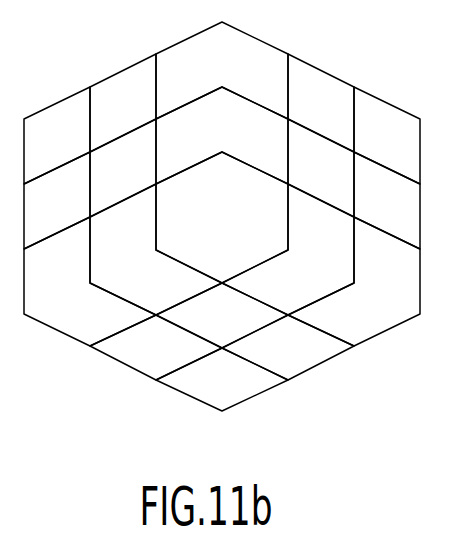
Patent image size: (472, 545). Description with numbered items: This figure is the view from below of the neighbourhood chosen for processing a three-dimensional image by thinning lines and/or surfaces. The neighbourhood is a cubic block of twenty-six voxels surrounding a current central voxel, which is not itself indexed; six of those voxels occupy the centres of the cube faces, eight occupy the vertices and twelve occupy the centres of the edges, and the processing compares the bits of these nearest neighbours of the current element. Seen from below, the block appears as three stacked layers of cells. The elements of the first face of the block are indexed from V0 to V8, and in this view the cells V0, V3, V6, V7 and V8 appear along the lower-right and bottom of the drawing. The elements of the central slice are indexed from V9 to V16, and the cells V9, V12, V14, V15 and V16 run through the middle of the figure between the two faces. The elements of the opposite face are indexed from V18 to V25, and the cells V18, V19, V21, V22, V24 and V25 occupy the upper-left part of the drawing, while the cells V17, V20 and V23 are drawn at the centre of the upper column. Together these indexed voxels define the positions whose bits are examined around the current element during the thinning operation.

The neighbourhood element V17 is at (222, 70).
The neighbourhood element V20 is at (222, 135).
The neighbourhood element V23 is at (222, 217).
The neighbourhood element V15 is at (222, 315).
The neighbourhood element V8 is at (222, 379).
The neighbourhood element V18 is at (123, 103).
The neighbourhood element V21 is at (123, 168).
The neighbourhood element V24 is at (156, 249).
The neighbourhood element V16 is at (156, 347).
The neighbourhood element V19 is at (57, 135).
The neighbourhood element V22 is at (57, 200).
The neighbourhood element V25 is at (90, 281).
The neighbourhood element V9 is at (321, 103).
The neighbourhood element V12 is at (321, 168).
The neighbourhood element V14 is at (288, 249).
The neighbourhood element V7 is at (288, 347).
The neighbourhood element V0 is at (387, 135).
The neighbourhood element V3 is at (387, 200).
The neighbourhood element V6 is at (354, 281).